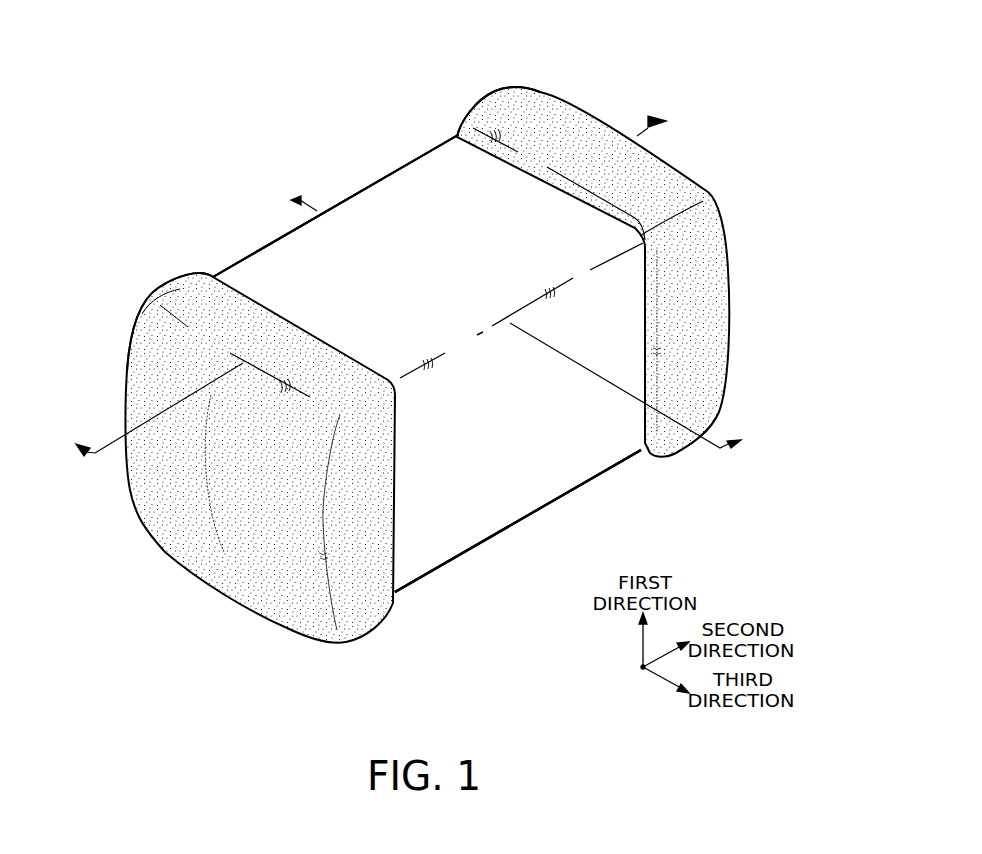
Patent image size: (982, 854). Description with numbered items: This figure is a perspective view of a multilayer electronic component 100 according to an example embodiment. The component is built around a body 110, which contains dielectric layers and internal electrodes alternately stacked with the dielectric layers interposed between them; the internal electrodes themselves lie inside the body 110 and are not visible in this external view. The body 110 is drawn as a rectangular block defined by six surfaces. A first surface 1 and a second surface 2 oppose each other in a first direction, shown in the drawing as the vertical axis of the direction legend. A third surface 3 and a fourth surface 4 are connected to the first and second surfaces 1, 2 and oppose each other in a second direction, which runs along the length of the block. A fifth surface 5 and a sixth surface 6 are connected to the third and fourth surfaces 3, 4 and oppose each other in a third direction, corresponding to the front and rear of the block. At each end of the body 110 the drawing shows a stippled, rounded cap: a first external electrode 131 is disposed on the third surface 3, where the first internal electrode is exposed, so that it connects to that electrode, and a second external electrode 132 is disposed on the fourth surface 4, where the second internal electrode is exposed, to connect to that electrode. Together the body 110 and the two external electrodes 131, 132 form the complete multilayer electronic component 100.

The multilayer electronic component 100 is at (269, 31).
The body 110 is at (367, 201).
The first surface 1 is at (487, 535).
The second surface 2 is at (413, 192).
The third surface 3 is at (193, 534).
The fourth surface 4 is at (583, 137).
The fifth surface 5 is at (265, 247).
The sixth surface 6 is at (540, 473).
The first external electrode 131 is at (180, 287).
The second external electrode 132 is at (500, 103).